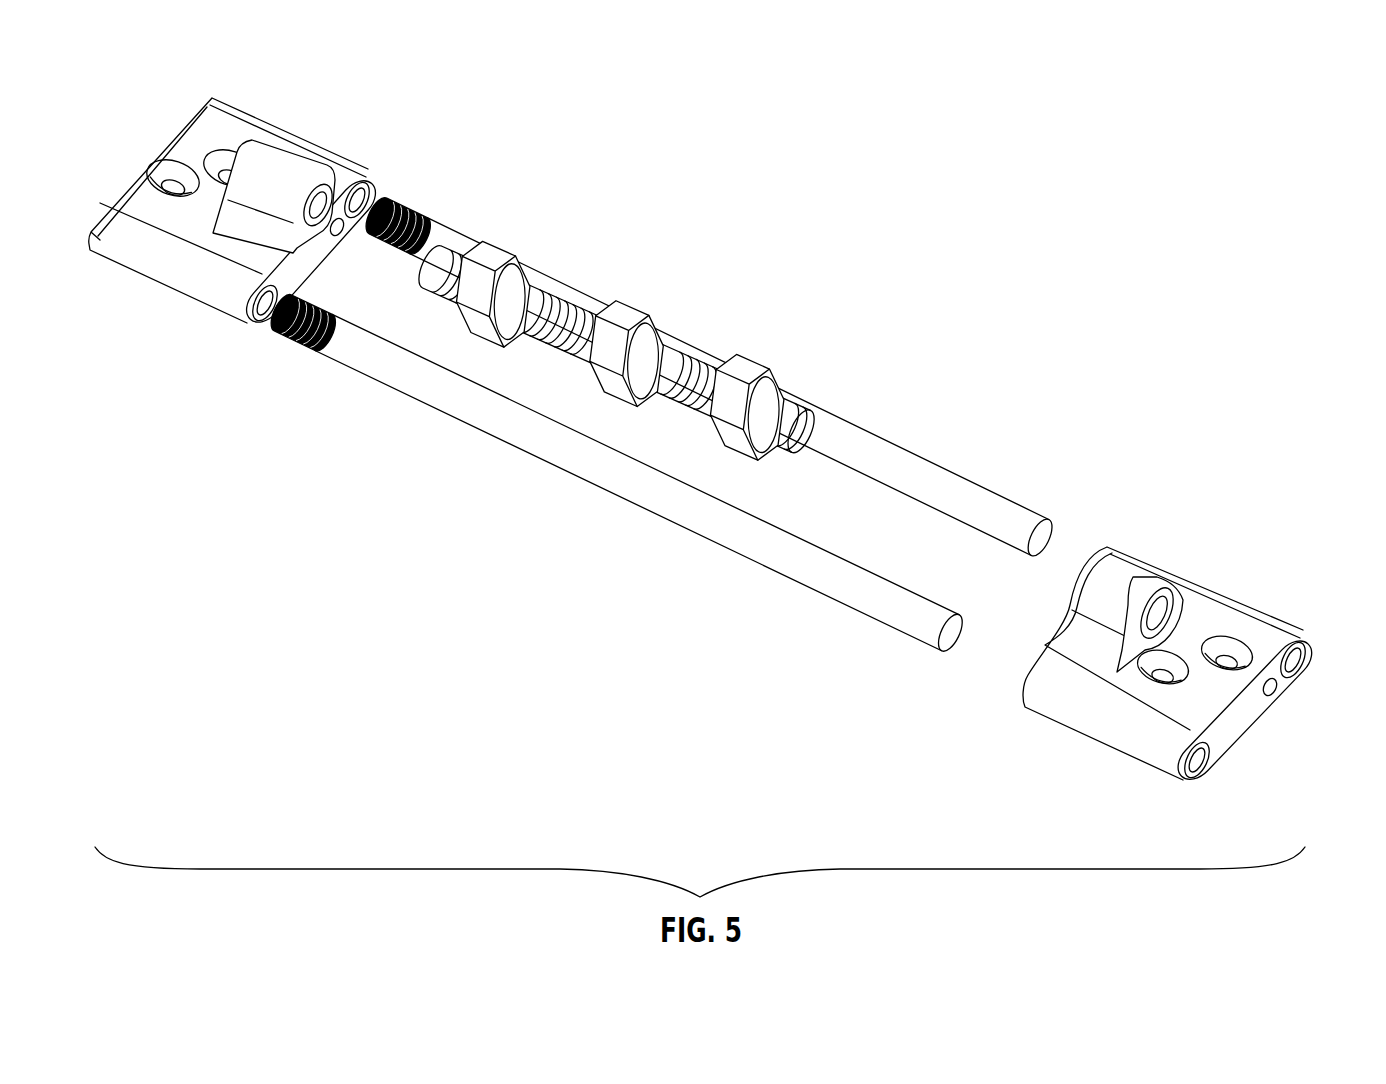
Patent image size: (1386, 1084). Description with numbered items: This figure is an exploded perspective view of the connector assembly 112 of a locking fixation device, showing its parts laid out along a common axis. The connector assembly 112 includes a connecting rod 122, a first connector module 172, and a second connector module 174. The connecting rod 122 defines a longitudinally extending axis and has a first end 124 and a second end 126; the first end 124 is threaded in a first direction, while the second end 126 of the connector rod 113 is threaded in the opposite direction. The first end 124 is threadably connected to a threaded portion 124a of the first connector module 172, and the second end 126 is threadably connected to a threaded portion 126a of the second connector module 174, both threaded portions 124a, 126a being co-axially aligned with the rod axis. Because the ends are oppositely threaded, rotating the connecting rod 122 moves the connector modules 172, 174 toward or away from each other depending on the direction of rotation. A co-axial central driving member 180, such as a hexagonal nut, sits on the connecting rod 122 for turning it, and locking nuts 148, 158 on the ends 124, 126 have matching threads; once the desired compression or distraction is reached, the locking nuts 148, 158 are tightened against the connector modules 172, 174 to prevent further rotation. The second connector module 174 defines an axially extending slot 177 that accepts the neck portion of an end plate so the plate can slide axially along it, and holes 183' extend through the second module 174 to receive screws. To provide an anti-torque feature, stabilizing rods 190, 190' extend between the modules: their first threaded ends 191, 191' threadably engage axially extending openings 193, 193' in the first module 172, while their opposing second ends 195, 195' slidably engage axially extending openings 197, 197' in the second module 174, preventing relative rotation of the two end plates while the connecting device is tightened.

The connector assembly 112 is at (734, 437).
The connector rod 113 is at (177, 161).
The connecting rod 122 is at (527, 343).
The first end 124 is at (430, 283).
The threaded portion 124a is at (253, 138).
The second end 126 is at (813, 418).
The threaded portion 126a is at (1127, 549).
The locking nut 148 is at (499, 251).
The locking nut 158 is at (764, 376).
The first connector module 172 is at (152, 282).
The second connector module 174 is at (1092, 743).
The slot 177 is at (271, 308).
The central driving member 180 is at (648, 309).
The holes 183' is at (1205, 619).
The stabilizing rod 190 is at (615, 484).
The stabilizing rod 190' is at (729, 387).
The first threaded end 191 is at (319, 297).
The first threaded end 191' is at (407, 199).
The axially extending opening 193 is at (273, 324).
The axially extending opening 193' is at (373, 173).
The second end 195 is at (964, 664).
The second end 195' is at (1055, 512).
The axially extending opening 197 is at (1230, 742).
The axially extending opening 197' is at (1328, 671).